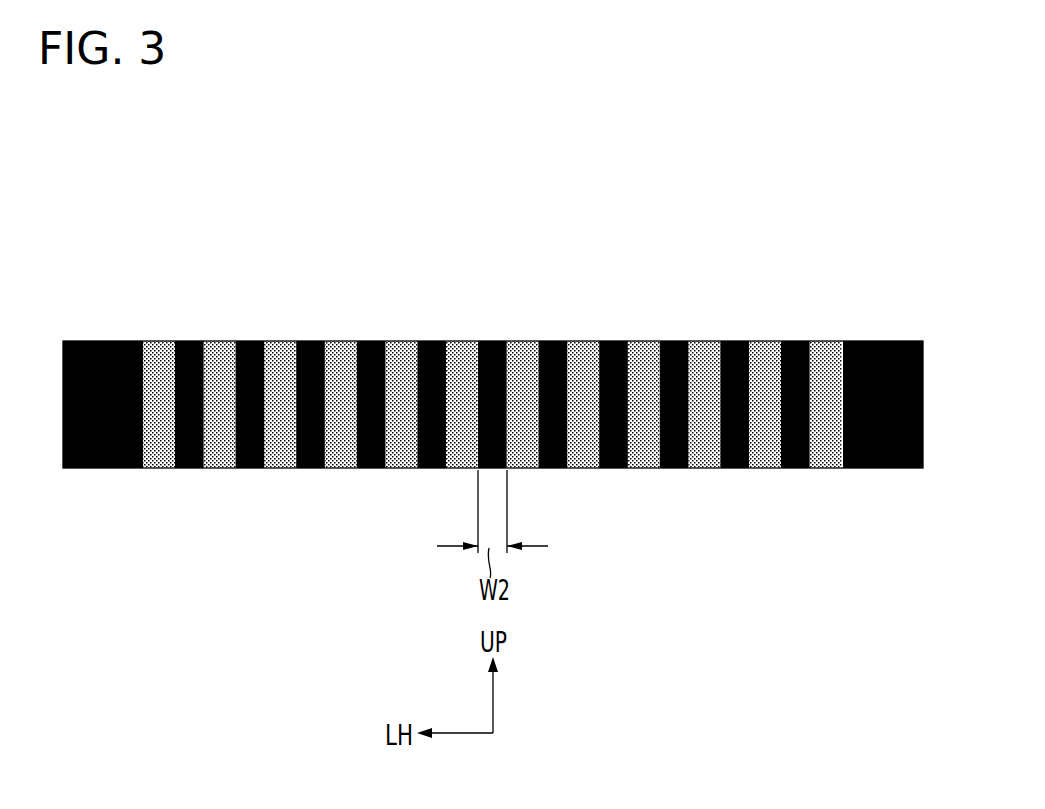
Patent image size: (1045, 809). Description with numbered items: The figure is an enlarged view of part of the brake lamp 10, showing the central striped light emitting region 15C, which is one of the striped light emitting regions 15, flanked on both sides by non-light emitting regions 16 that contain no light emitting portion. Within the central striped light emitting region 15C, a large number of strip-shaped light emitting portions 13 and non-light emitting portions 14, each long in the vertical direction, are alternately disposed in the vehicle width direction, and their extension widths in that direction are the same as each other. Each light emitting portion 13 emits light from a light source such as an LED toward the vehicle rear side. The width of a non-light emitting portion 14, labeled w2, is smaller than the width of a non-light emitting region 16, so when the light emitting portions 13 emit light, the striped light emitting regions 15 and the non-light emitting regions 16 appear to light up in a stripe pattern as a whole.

The brake lamp 10 is at (865, 305).
The light emitting portion 13 is at (462, 452).
The non-light emitting portion 14 is at (189, 347).
The striped light emitting region 15 is at (493, 265).
The central striped light emitting region 15C is at (845, 294).
The non-light emitting region 16 is at (102, 347).